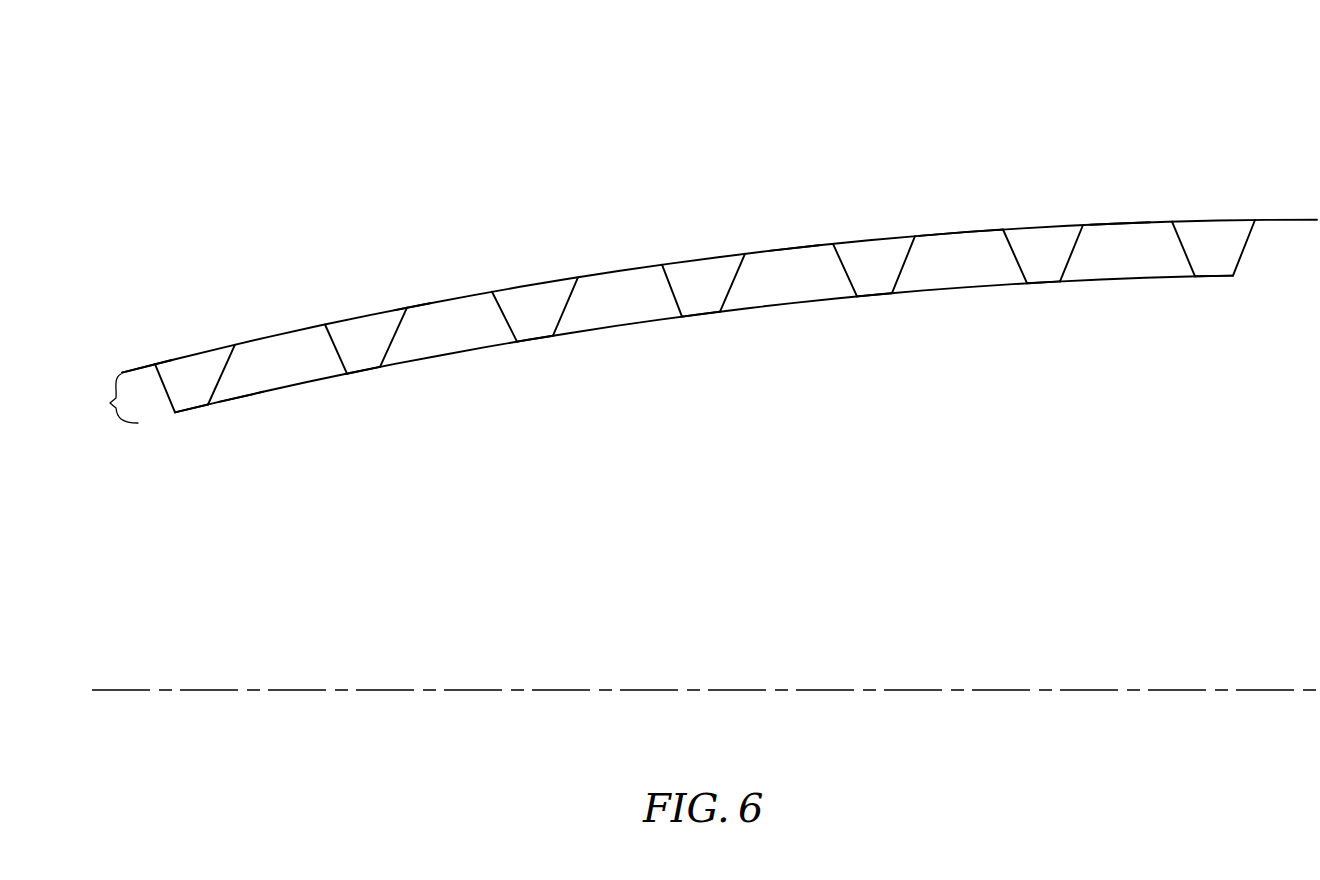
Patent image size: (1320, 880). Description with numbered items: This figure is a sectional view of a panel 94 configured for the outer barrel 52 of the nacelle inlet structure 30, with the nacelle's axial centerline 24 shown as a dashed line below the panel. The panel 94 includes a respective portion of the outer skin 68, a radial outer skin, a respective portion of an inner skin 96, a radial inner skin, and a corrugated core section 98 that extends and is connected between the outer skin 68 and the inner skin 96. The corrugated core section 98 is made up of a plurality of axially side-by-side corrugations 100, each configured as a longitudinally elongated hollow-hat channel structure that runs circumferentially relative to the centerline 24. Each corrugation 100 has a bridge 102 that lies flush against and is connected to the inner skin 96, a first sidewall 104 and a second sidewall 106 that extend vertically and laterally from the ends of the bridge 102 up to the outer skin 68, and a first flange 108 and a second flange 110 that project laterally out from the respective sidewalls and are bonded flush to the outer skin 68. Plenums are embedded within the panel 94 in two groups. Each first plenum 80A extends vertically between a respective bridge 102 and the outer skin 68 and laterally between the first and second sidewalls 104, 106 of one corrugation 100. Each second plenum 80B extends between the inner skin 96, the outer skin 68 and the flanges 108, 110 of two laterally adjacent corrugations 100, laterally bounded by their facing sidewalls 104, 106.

The axial centerline 24 is at (117, 692).
The nacelle inlet structure 30 is at (192, 170).
The outer barrel 52 is at (307, 218).
The outer skin 68 is at (168, 360).
The first plenums 80A is at (201, 352).
The second plenums 80B is at (300, 374).
The panel 94 is at (412, 302).
The inner skin 96 is at (243, 398).
The corrugated core section 98 is at (109, 400).
The corrugations 100 is at (705, 324).
The bridge 102 is at (877, 298).
The first sidewall 104 is at (840, 276).
The second sidewall 106 is at (910, 259).
The first flange 108 is at (815, 244).
The second flange 110 is at (930, 235).